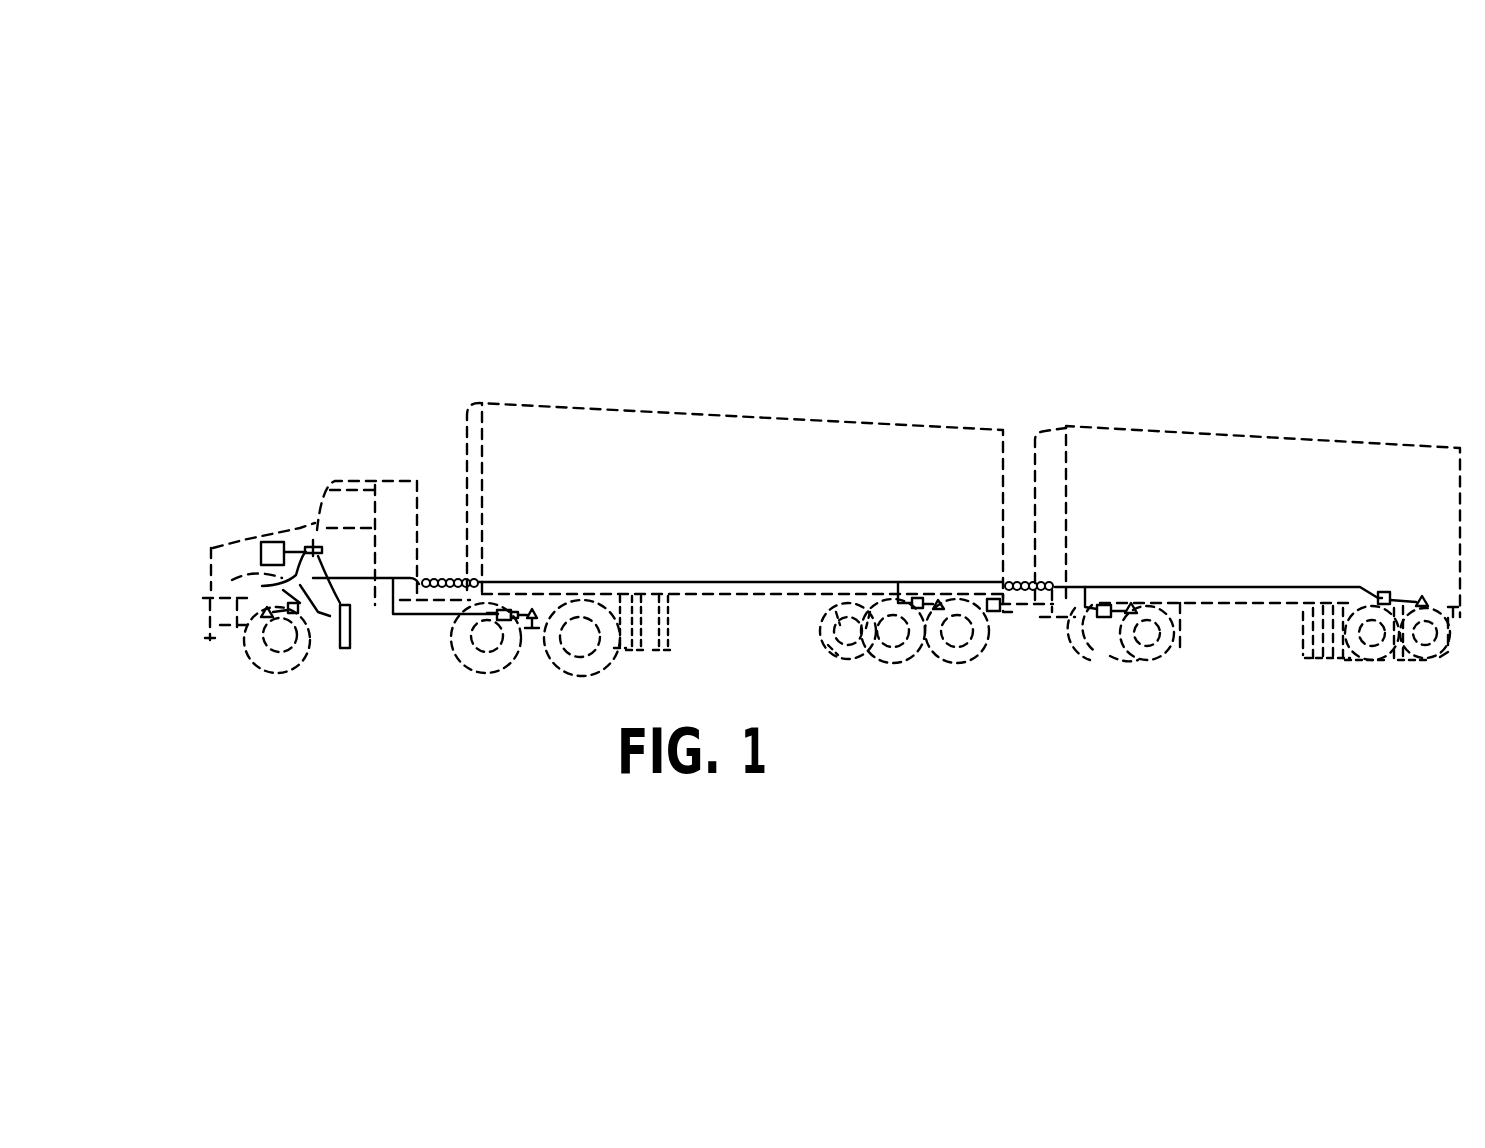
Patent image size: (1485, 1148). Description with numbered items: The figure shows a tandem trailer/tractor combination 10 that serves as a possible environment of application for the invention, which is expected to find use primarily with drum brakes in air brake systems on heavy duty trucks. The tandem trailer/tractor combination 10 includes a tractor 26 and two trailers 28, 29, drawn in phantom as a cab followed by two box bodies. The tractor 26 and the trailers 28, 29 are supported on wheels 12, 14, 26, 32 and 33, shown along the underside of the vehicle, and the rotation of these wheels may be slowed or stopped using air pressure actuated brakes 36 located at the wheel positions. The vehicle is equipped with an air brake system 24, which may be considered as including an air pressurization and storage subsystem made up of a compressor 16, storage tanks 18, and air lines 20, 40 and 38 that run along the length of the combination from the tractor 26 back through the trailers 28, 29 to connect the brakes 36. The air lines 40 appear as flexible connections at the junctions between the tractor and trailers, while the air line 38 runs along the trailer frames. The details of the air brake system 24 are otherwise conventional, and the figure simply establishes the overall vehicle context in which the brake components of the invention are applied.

The tandem trailer/tractor combination 10 is at (519, 312).
The wheels 12 is at (252, 660).
The wheels 14 is at (486, 675).
The compressor 16 is at (262, 586).
The storage tanks 18 is at (331, 578).
The air lines 20 is at (308, 578).
The air brake system 24 is at (709, 606).
The tractor 26 is at (250, 530).
The trailer 28 is at (766, 416).
The trailer 29 is at (1245, 430).
The wheels 32 is at (1116, 668).
The wheels 33 is at (1323, 668).
The air pressure actuated brakes 36 is at (296, 612).
The air lines 38 is at (655, 582).
The air lines 40 is at (476, 580).